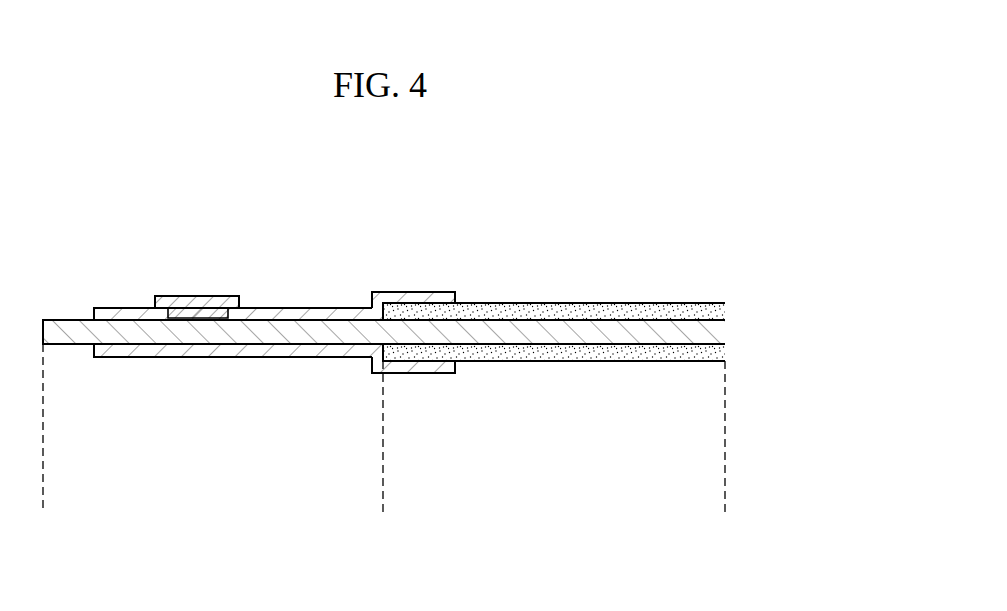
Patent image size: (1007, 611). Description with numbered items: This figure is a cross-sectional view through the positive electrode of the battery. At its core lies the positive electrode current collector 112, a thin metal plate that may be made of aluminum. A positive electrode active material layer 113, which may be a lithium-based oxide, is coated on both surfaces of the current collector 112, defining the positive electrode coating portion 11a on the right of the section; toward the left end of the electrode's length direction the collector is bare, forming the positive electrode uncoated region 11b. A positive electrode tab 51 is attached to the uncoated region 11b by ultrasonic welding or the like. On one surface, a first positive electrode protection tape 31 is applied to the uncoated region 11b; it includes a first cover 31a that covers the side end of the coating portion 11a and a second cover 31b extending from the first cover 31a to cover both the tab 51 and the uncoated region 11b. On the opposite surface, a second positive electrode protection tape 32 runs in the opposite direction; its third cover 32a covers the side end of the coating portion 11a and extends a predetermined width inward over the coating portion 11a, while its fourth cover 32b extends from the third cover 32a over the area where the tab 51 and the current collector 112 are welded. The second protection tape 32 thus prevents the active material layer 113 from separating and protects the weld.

The positive electrode current collector 112 is at (124, 332).
The positive electrode active material layer 113 is at (562, 312).
The first positive electrode protection tape 31 is at (274, 259).
The first cover 31a is at (413, 274).
The second cover 31b is at (342, 312).
The second positive electrode protection tape 32 is at (274, 406).
The third cover 32a is at (413, 390).
The fourth cover 32b is at (350, 348).
The positive electrode tab 51 is at (205, 312).
The positive electrode coating portion 11a is at (725, 512).
The positive electrode uncoated region 11b is at (383, 512).